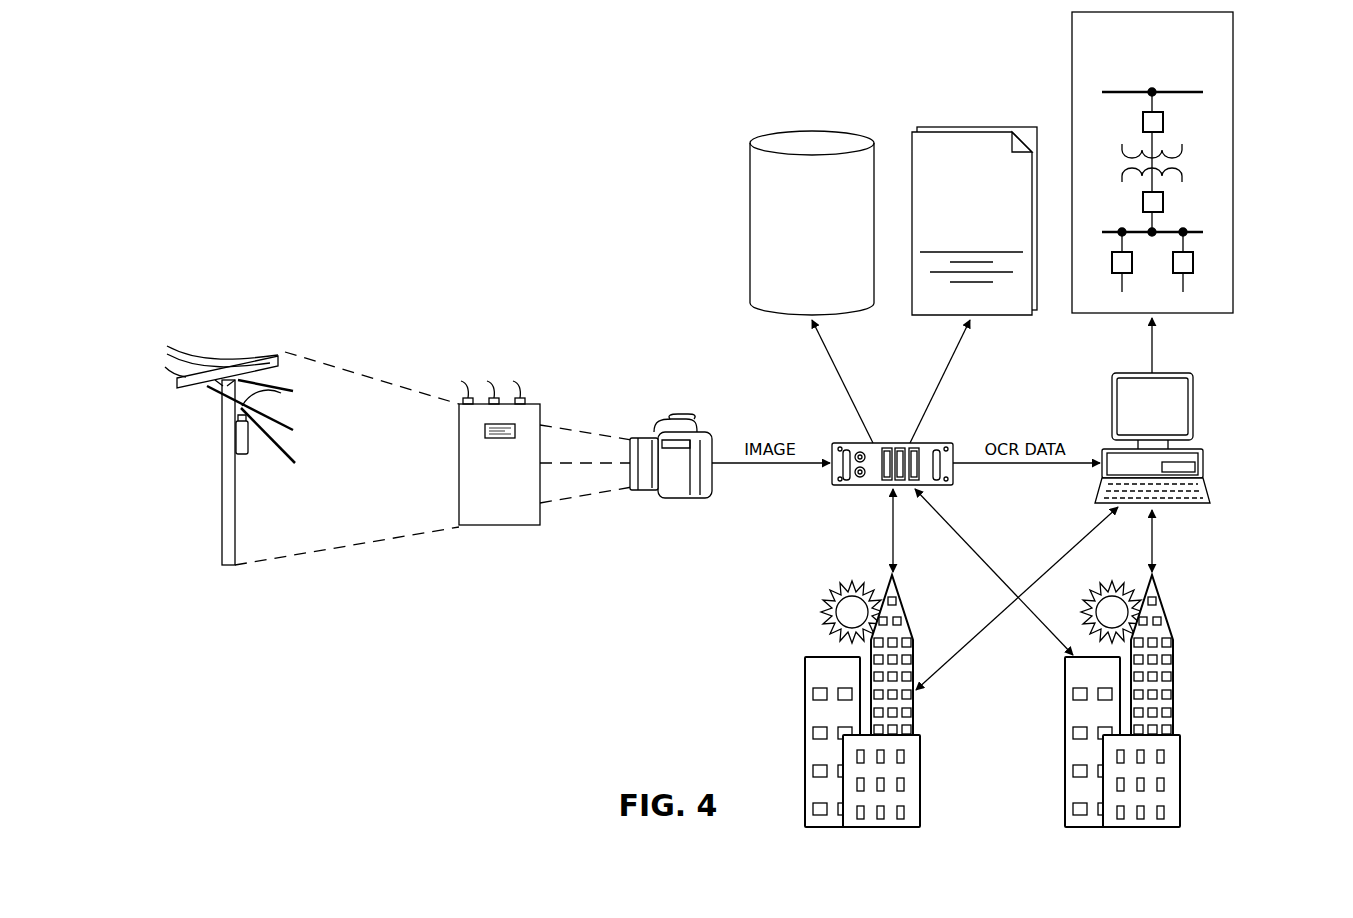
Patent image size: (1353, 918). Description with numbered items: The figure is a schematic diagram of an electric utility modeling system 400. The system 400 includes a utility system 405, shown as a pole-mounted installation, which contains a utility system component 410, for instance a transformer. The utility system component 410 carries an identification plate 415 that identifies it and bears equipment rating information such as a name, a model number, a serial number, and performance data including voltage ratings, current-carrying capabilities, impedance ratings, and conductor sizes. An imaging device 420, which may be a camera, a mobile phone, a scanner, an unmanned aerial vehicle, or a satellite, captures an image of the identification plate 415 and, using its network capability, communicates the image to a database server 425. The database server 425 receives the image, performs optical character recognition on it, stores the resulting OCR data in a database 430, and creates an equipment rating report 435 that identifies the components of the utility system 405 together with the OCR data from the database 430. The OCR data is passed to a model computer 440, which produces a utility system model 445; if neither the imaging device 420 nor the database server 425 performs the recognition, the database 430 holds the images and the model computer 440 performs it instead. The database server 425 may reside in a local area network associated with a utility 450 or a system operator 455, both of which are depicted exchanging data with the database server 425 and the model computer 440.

The electric utility modeling system 400 is at (398, 168).
The utility system 405 is at (224, 475).
The utility system component 410 is at (500, 527).
The identification plate 415 is at (485, 430).
The imaging device 420 is at (667, 419).
The database server 425 is at (855, 485).
The database 430 is at (798, 130).
The equipment rating report 435 is at (983, 127).
The model computer 440 is at (1193, 405).
The utility system model 445 is at (1238, 162).
The utility 450 is at (915, 705).
The system operator 455 is at (1175, 705).